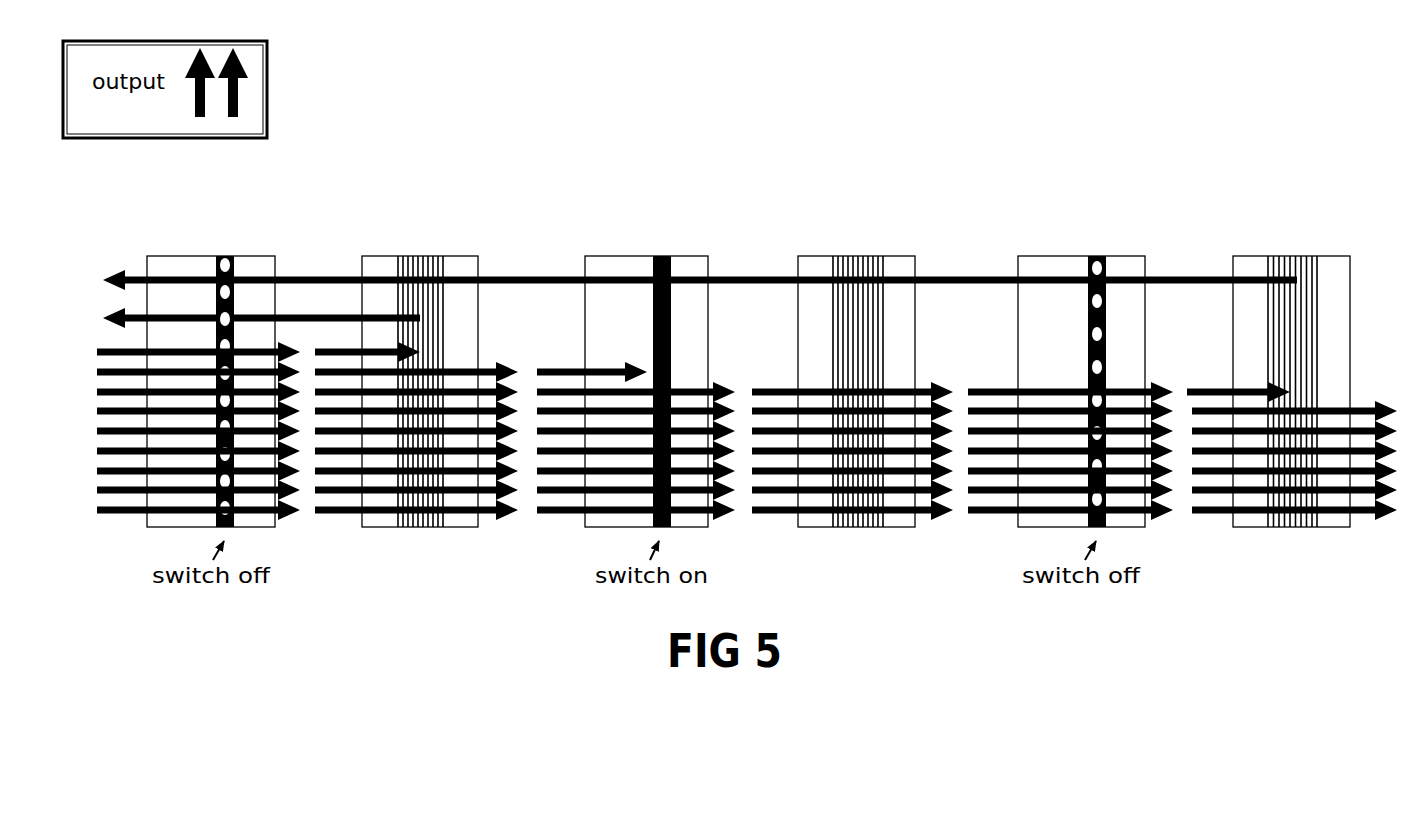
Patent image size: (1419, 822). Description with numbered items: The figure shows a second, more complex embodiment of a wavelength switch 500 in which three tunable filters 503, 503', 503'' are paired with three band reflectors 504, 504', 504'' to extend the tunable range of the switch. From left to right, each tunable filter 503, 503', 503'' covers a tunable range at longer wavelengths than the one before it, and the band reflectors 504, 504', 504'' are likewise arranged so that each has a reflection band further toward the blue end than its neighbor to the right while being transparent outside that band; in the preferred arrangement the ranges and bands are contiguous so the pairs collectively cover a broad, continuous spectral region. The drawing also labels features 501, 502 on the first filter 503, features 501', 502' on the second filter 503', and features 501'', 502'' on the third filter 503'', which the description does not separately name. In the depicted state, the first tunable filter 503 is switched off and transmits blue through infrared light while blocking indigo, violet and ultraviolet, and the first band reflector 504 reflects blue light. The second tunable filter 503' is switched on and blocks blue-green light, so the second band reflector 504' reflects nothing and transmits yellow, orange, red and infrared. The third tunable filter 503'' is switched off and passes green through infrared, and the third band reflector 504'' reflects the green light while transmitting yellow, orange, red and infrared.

The wavelength switch 500 is at (710, 130).
The cladding region 501 is at (198, 364).
The switching column 502 is at (282, 326).
The first tunable filter 503 is at (218, 326).
The first band reflector 504 is at (420, 332).
The cladding region 501' is at (621, 362).
The switching column 502' is at (640, 333).
The second tunable filter 503' is at (607, 319).
The second band reflector 504' is at (856, 332).
The cladding region 501'' is at (1094, 351).
The switching column 502'' is at (1081, 333).
The third tunable filter 503'' is at (1084, 318).
The third band reflector 504'' is at (1291, 334).